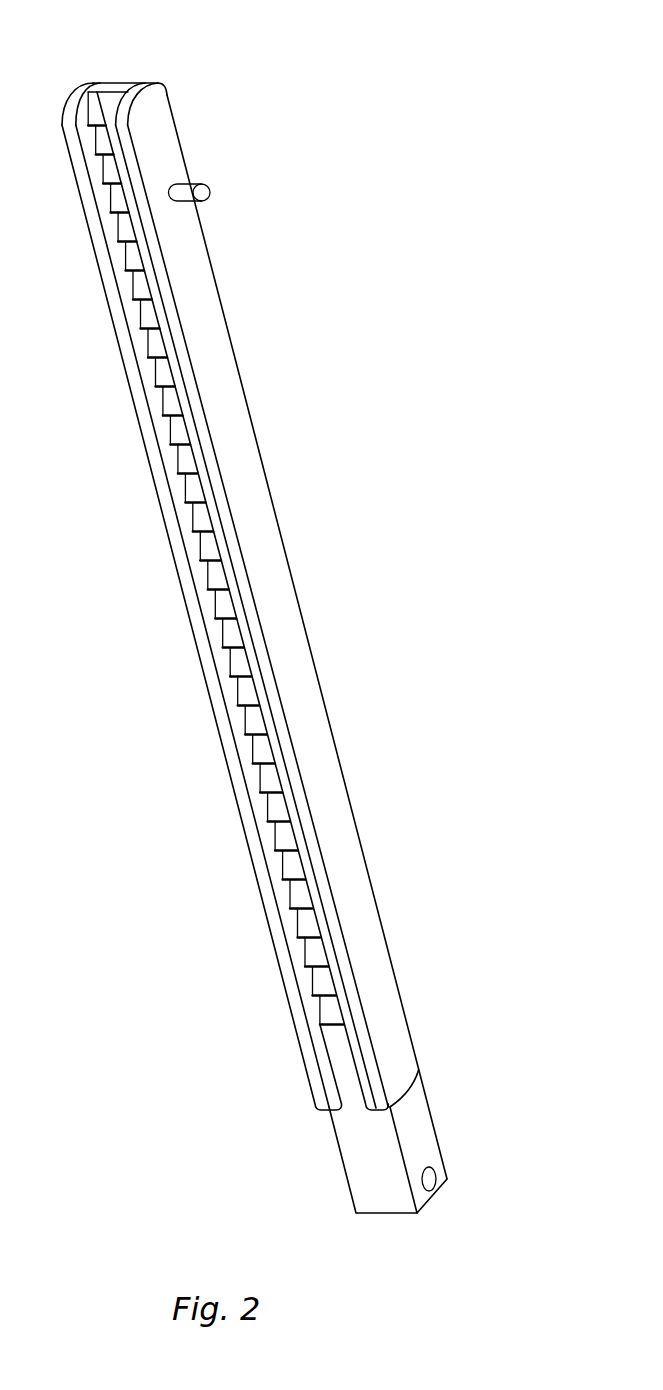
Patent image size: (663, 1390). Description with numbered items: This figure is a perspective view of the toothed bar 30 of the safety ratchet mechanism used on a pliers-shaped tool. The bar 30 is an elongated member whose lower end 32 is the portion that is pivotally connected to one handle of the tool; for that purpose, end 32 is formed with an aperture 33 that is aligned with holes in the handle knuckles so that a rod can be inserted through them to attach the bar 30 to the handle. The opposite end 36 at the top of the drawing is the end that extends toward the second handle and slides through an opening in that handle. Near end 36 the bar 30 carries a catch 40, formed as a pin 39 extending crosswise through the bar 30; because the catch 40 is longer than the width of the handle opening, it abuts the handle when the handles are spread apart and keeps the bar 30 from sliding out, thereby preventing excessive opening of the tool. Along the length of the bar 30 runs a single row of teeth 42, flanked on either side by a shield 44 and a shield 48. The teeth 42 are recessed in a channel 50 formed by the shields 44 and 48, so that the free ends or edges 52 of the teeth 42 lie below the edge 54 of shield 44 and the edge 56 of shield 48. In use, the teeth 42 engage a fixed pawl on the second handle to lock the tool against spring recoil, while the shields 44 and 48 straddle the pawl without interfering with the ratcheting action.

The toothed bar 30 is at (420, 1110).
The end 32 is at (390, 1215).
The aperture 33 is at (437, 1177).
The opposite end 36 is at (124, 83).
The pin 39 is at (213, 198).
The catch 40 is at (210, 190).
The teeth 42 is at (206, 553).
The shield 44 is at (193, 638).
The shield 48 is at (300, 632).
The channel 50 is at (160, 403).
The free ends or edges 52 is at (272, 797).
The edge 54 is at (268, 913).
The edge 56 is at (332, 952).